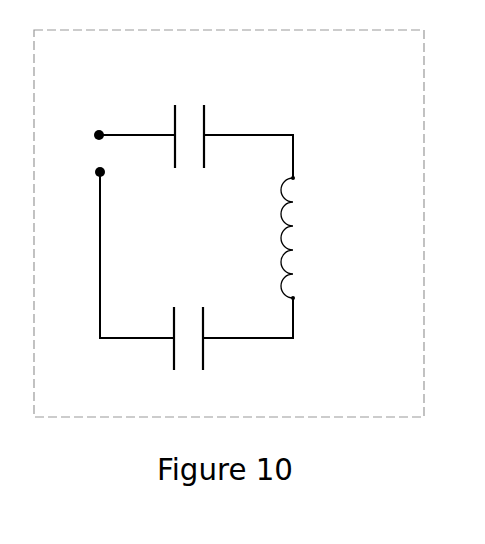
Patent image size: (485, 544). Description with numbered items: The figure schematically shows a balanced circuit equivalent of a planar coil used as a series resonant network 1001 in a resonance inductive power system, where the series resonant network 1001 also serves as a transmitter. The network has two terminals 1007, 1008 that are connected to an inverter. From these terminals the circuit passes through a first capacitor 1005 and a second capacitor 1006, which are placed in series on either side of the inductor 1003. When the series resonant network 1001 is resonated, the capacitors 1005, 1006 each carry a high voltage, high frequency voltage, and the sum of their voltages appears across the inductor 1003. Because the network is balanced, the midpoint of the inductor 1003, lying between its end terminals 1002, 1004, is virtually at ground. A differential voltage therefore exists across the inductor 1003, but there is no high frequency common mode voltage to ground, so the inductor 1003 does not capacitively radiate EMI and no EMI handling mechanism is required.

The series resonant network 1001 is at (229, 223).
The terminal of the inductor 1002 is at (295, 177).
The inductor 1003 is at (297, 238).
The terminal of the inductor 1004 is at (295, 299).
The capacitor 1005 is at (189, 120).
The capacitor 1006 is at (192, 355).
The terminal 1007 is at (98, 133).
The terminal 1008 is at (128, 181).